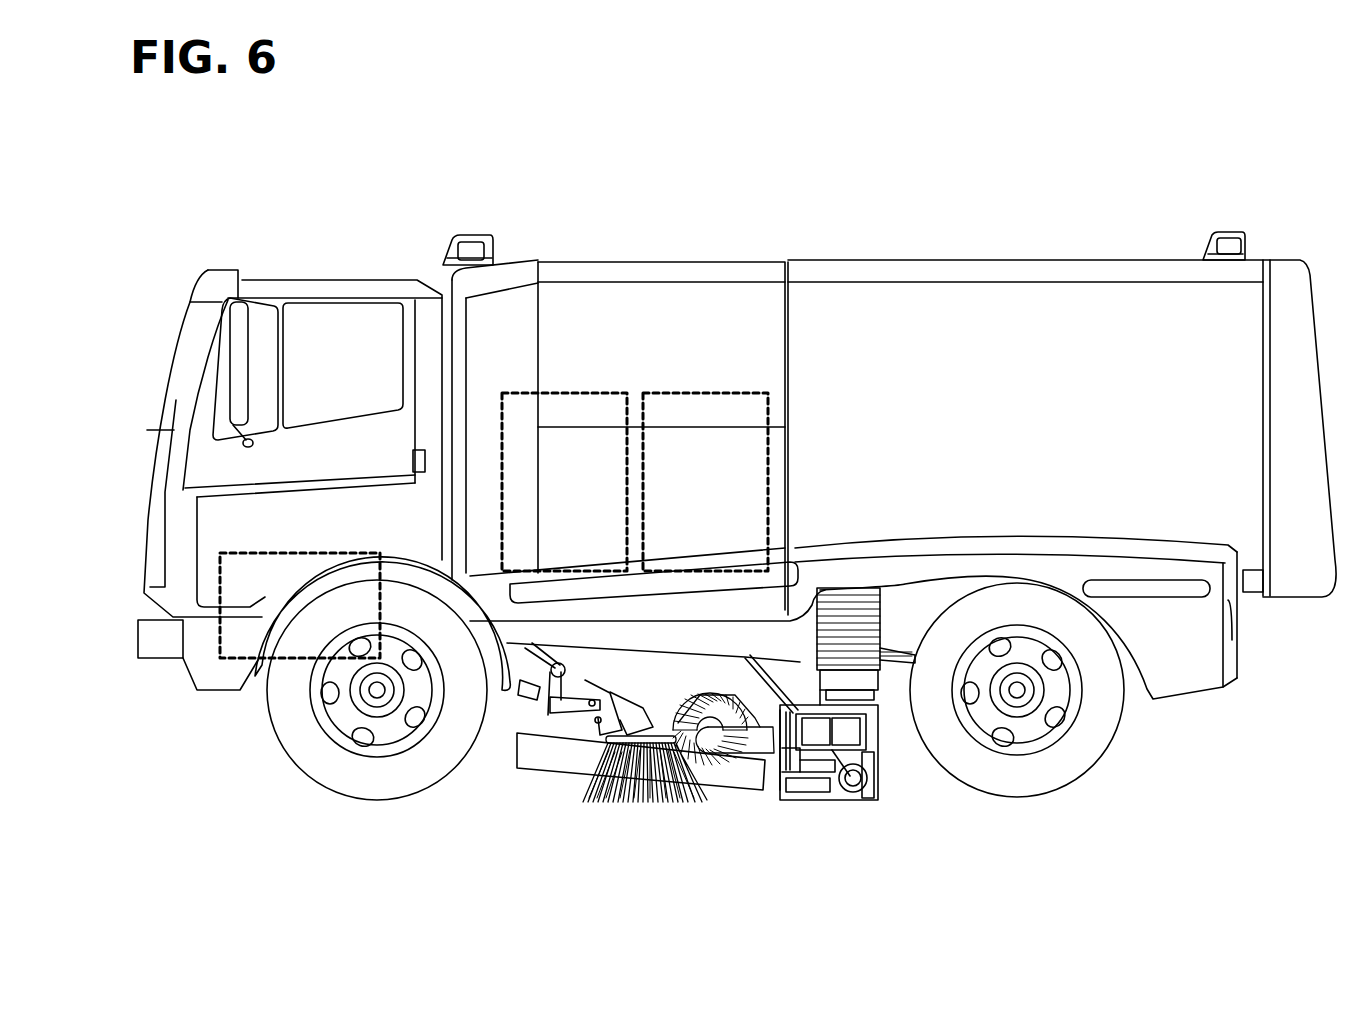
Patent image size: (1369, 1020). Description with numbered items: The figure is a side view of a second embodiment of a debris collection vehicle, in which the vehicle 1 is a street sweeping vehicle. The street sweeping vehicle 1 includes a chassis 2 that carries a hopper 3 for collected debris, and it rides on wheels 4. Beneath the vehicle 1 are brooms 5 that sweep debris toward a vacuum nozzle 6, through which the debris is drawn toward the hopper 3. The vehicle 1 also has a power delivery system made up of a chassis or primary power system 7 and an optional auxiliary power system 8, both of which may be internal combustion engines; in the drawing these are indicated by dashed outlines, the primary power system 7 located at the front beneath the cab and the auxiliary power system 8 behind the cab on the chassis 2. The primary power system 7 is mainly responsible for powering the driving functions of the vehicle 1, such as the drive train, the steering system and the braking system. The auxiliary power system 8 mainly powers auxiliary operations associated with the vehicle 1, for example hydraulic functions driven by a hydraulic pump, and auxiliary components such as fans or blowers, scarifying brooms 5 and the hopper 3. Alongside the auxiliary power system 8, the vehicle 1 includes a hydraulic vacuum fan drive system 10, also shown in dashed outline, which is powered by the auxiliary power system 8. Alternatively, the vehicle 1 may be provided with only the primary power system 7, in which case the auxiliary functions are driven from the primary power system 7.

The vehicle 1 is at (256, 181).
The chassis 2 is at (598, 632).
The hopper 3 is at (968, 377).
The wheels 4 is at (345, 730).
The brooms 5 is at (703, 708).
The vacuum nozzle 6 is at (803, 797).
The primary power system 7 is at (257, 657).
The auxiliary power system 8 is at (575, 393).
The hydraulic vacuum fan drive system 10 is at (700, 393).